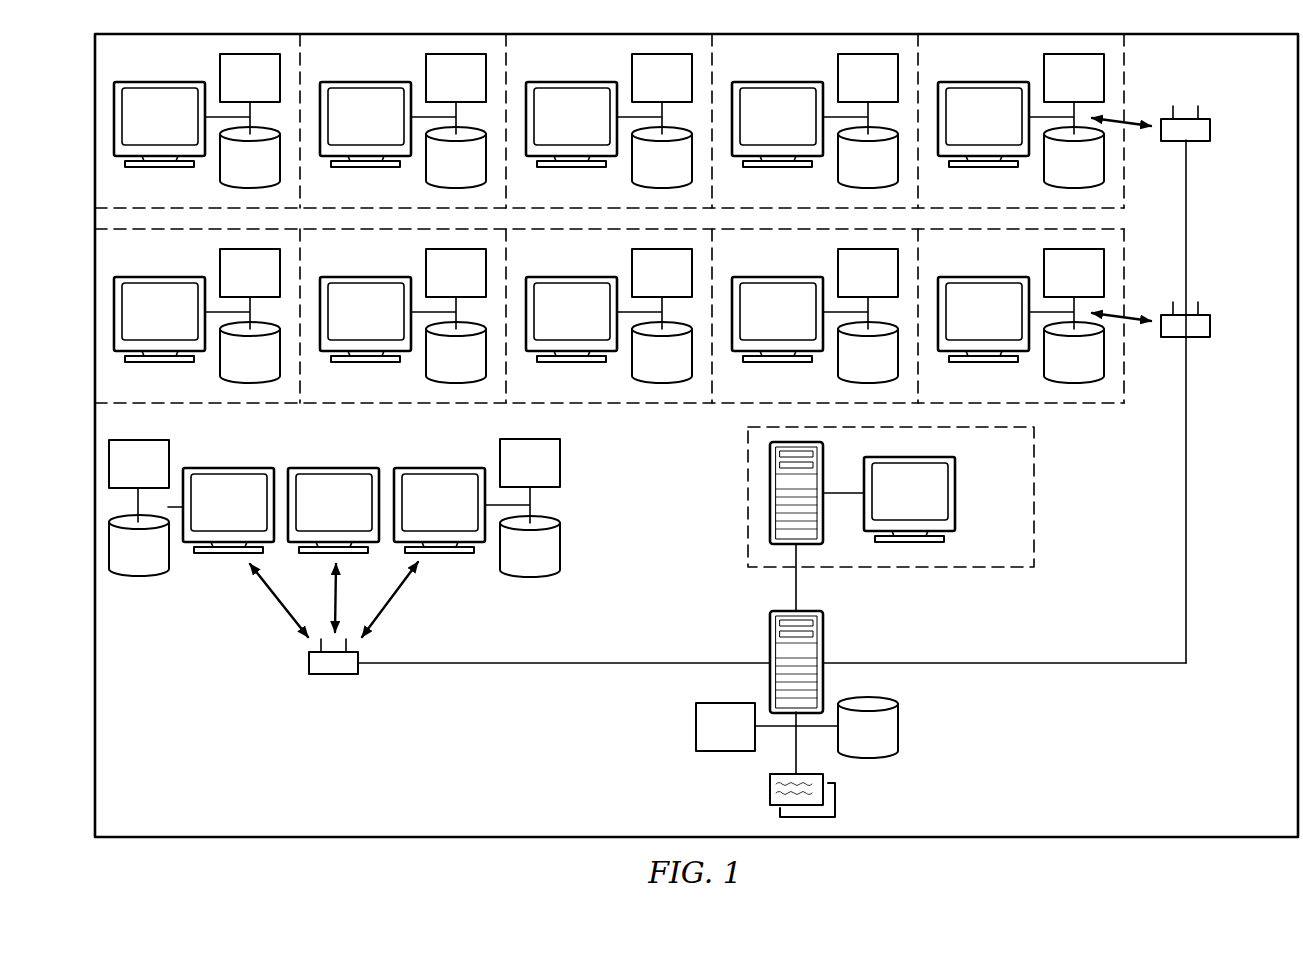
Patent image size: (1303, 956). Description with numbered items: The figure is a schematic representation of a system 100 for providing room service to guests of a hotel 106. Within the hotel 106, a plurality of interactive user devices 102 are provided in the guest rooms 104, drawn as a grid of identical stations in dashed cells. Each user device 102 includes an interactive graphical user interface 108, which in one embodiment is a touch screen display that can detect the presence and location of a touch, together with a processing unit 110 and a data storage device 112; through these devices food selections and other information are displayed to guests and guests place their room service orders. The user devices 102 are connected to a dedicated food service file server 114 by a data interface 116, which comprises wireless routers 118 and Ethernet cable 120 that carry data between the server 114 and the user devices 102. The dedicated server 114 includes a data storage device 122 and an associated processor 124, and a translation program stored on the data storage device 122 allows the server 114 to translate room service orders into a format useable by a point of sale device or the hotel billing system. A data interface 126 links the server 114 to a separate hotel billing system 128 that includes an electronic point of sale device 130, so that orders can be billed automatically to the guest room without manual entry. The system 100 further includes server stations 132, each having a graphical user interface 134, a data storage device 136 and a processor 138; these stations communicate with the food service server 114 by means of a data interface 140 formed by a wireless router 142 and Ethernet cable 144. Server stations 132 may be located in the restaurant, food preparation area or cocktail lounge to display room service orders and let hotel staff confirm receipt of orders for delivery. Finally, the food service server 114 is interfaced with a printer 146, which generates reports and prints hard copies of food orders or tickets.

The system 100 is at (696, 469).
The interactive user device 102 is at (552, 125).
The guest room 104 is at (141, 64).
The hotel 106 is at (432, 838).
The interactive graphical user interface 108 is at (141, 125).
The processing unit 110 is at (231, 90).
The data storage device 112 is at (231, 170).
The dedicated food service file server 114 is at (823, 641).
The data interface 116 is at (819, 427).
The wireless router 118 is at (1210, 128).
The Ethernet cable 120 is at (1186, 525).
The data storage device 122 is at (849, 740).
The processor 124 is at (706, 738).
The data interface 126 is at (796, 587).
The hotel billing system 128 is at (922, 516).
The electronic point of sale device 130 is at (955, 503).
The server station 132 is at (228, 468).
The graphical user interface 134 is at (440, 468).
The data storage device 136 is at (511, 557).
The processor 138 is at (511, 475).
The data interface 140 is at (334, 592).
The wireless router 142 is at (334, 675).
The Ethernet cable 144 is at (550, 664).
The printer 146 is at (770, 791).